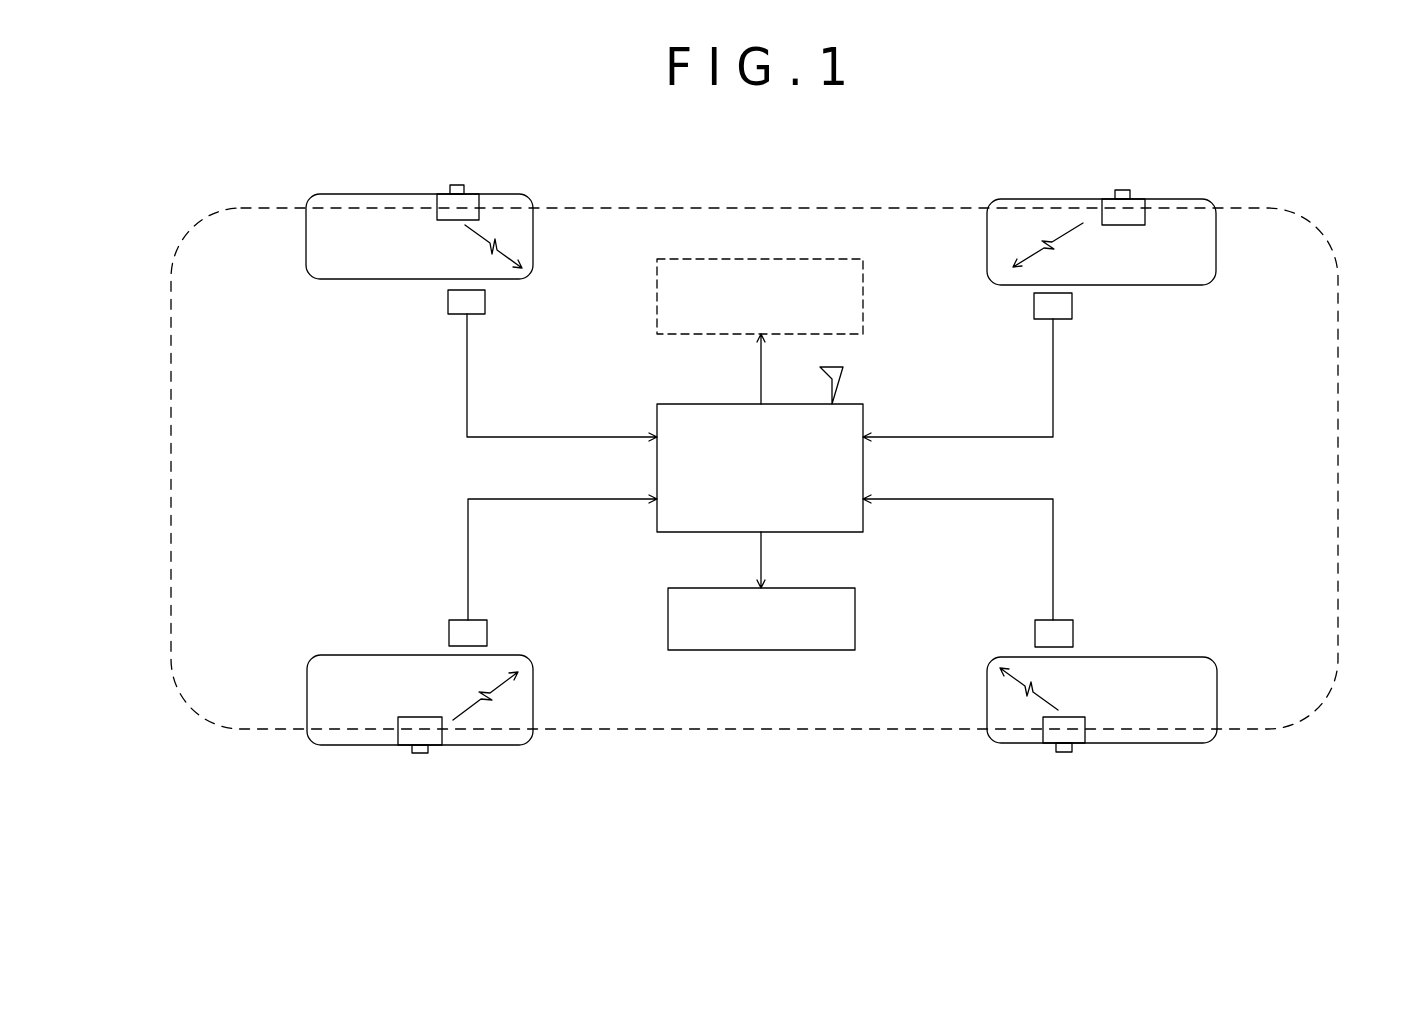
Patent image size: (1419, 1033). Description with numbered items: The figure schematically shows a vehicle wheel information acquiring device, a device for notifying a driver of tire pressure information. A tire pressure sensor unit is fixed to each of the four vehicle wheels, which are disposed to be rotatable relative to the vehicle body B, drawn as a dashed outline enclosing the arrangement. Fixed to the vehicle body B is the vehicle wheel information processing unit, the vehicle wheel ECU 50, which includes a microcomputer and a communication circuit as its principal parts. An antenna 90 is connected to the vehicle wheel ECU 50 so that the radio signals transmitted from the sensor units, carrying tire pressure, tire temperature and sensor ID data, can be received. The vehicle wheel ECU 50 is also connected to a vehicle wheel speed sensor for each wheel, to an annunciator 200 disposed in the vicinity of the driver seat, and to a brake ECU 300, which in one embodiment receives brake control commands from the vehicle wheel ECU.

The vehicle wheel information processing unit 50 is at (865, 417).
The antenna 90 is at (837, 385).
The annunciator 200 is at (857, 618).
The brake ECU 300 is at (816, 258).
The vehicle body B is at (1340, 472).